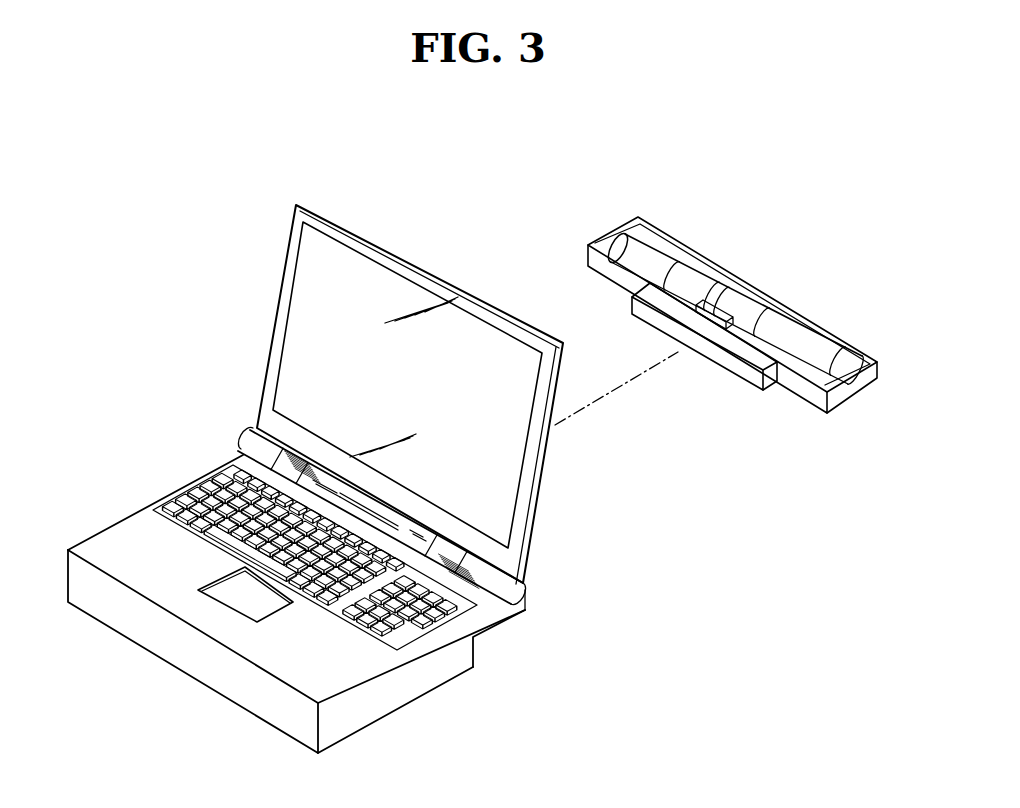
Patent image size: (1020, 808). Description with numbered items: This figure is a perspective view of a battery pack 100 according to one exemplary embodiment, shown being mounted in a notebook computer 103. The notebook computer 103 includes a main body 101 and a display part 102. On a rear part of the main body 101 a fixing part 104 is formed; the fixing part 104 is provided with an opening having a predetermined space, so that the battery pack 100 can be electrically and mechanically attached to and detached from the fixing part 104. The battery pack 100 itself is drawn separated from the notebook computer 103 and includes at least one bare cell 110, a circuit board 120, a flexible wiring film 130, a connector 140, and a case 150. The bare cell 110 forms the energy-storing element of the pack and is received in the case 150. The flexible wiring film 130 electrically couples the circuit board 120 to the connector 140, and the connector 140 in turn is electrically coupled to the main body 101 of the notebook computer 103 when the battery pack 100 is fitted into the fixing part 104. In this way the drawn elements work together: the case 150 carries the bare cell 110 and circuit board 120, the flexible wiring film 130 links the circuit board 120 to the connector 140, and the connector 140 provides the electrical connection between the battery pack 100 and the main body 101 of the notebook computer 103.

The battery pack 100 is at (813, 192).
The bare cell 110 is at (693, 262).
The circuit board 120 is at (626, 260).
The flexible wiring film 130 is at (745, 282).
The connector 140 is at (735, 363).
The case 150 is at (802, 313).
The main body 101 is at (277, 663).
The display part 102 is at (508, 462).
The notebook computer 103 is at (205, 292).
The fixing part 104 is at (505, 632).